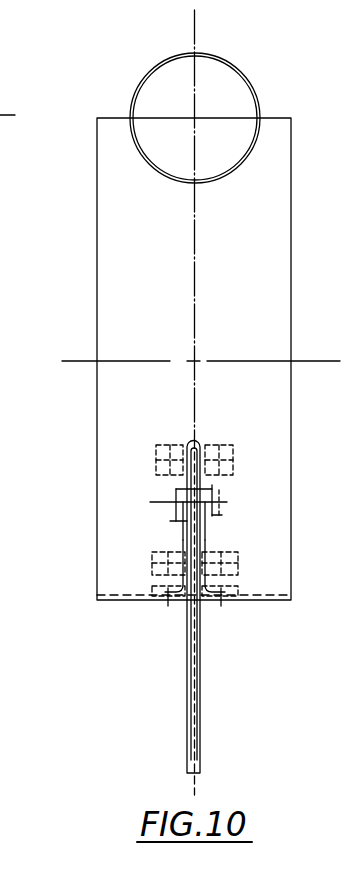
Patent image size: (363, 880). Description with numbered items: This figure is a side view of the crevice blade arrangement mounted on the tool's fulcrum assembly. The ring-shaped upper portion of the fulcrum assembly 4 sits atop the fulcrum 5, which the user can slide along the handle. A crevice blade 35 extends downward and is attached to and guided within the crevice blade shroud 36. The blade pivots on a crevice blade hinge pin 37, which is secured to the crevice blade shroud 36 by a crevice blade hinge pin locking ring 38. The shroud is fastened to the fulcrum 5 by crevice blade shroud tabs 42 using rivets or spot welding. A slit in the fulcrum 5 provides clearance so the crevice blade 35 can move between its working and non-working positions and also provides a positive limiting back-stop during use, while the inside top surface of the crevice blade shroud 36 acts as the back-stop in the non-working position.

The fulcrum assembly 4 is at (140, 82).
The fulcrum 5 is at (133, 601).
The crevice blade 35 is at (200, 695).
The crevice blade shroud 36 is at (185, 532).
The crevice blade hinge pin 37 is at (178, 494).
The crevice blade hinge pin locking ring 38 is at (208, 487).
The crevice blade shroud tabs 42 is at (155, 565).